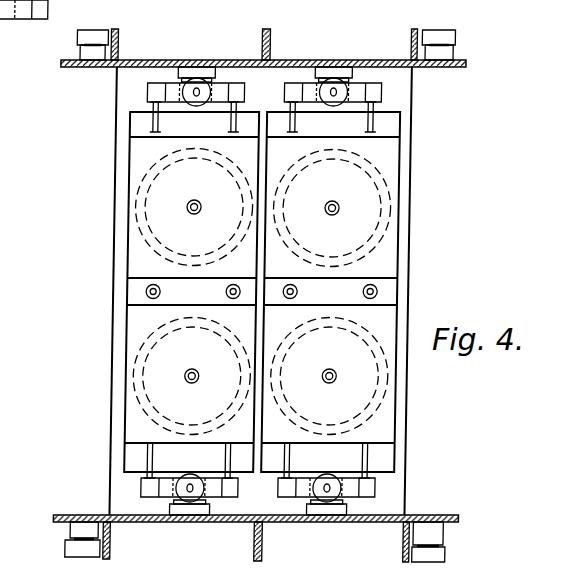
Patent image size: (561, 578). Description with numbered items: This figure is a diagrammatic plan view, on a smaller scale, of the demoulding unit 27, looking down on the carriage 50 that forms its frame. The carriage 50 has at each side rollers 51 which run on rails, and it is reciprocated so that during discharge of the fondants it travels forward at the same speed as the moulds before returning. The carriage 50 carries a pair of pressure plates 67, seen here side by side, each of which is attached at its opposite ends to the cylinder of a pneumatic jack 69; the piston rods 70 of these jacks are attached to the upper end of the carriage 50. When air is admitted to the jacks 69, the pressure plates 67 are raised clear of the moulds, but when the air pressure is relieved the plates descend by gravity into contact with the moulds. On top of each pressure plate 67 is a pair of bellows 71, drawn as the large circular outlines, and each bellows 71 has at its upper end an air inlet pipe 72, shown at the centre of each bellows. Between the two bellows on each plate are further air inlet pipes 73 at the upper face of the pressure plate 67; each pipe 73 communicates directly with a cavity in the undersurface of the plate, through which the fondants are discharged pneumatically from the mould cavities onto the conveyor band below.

The demoulding unit 27 is at (108, 229).
The carriage 50 is at (294, 60).
The rollers 51 is at (78, 32).
The pressure plates 67 is at (394, 127).
The pneumatic jack 69 is at (198, 80).
The piston rods 70 is at (200, 100).
The bellows 71 is at (146, 183).
The air inlet pipe 72 is at (201, 203).
The air inlet pipes 73 is at (231, 292).